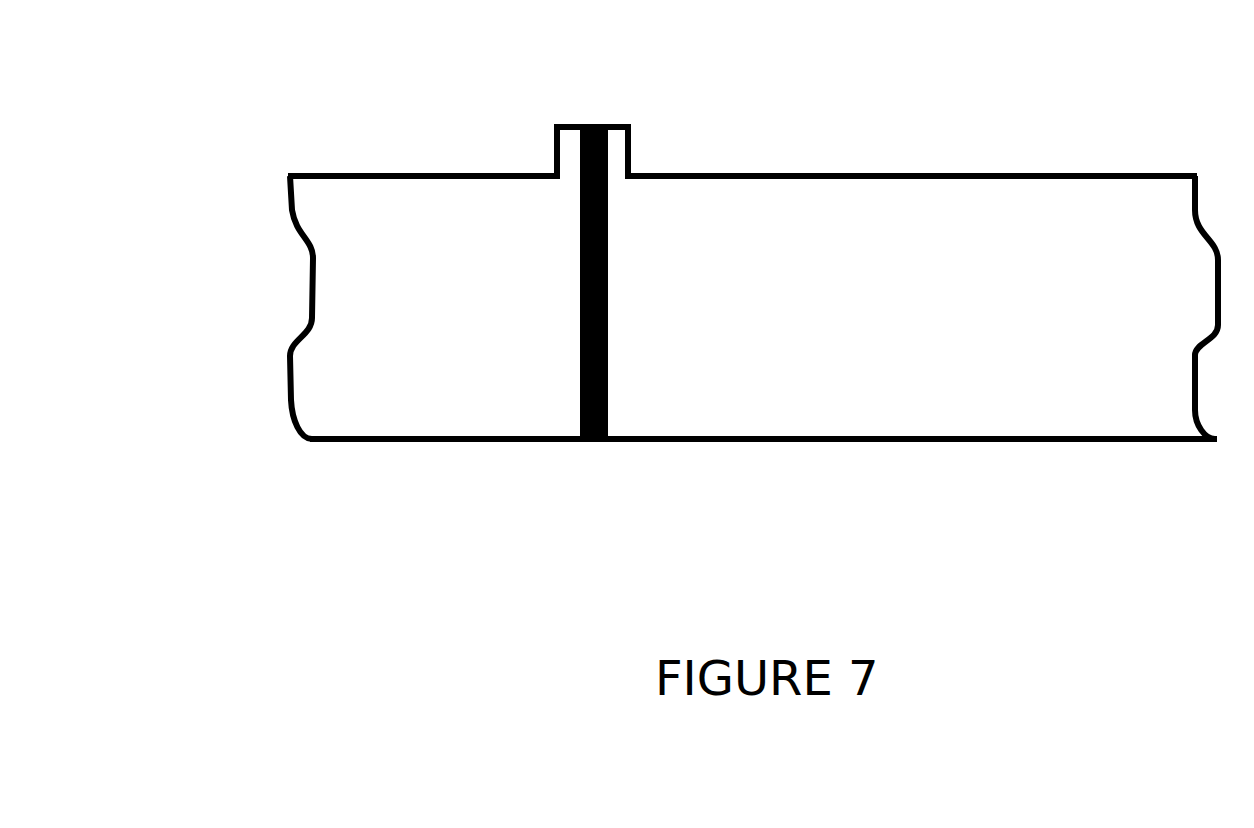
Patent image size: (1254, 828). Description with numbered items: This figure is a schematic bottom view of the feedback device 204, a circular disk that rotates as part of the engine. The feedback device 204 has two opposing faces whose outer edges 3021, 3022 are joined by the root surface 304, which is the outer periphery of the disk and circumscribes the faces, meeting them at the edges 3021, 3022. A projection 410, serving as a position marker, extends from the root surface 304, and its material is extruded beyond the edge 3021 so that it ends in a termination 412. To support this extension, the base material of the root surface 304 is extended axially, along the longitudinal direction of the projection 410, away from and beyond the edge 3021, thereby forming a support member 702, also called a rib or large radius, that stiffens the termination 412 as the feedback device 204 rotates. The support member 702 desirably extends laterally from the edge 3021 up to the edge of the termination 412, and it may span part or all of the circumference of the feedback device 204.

The feedback device 204 is at (270, 296).
The outer edge of first face 3021 is at (380, 158).
The outer edge of second face 3022 is at (392, 456).
The root surface 304 is at (1108, 225).
The projection 410 is at (608, 243).
The termination 412 is at (580, 148).
The support member 702 is at (620, 158).